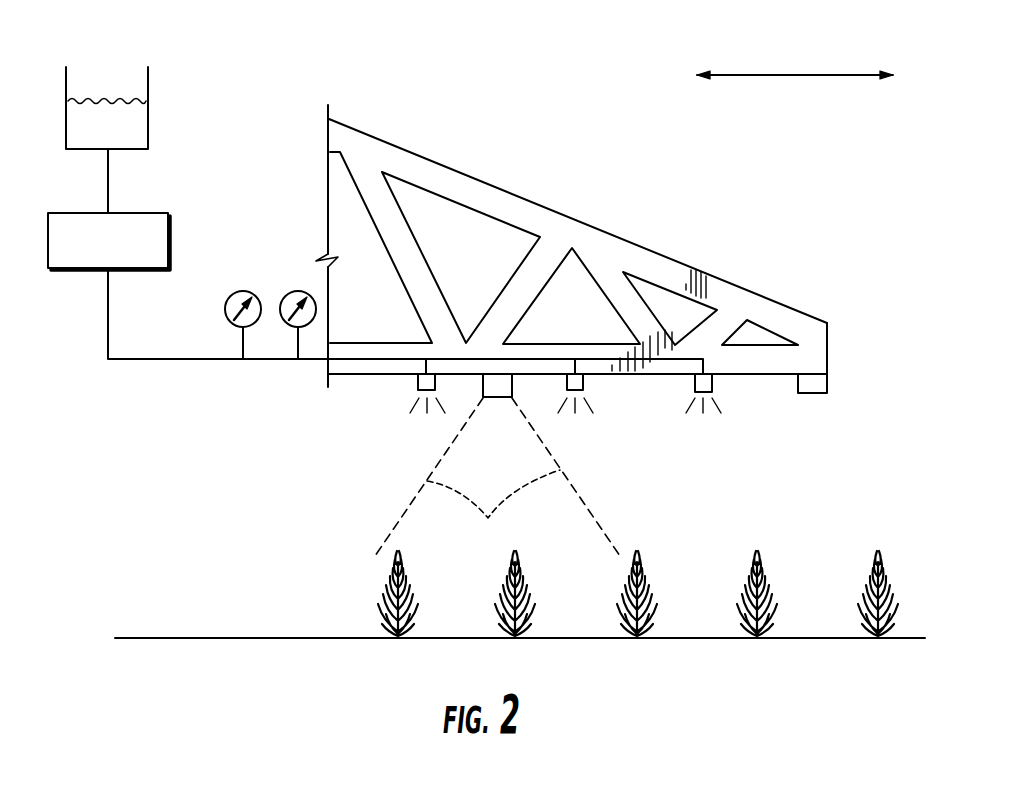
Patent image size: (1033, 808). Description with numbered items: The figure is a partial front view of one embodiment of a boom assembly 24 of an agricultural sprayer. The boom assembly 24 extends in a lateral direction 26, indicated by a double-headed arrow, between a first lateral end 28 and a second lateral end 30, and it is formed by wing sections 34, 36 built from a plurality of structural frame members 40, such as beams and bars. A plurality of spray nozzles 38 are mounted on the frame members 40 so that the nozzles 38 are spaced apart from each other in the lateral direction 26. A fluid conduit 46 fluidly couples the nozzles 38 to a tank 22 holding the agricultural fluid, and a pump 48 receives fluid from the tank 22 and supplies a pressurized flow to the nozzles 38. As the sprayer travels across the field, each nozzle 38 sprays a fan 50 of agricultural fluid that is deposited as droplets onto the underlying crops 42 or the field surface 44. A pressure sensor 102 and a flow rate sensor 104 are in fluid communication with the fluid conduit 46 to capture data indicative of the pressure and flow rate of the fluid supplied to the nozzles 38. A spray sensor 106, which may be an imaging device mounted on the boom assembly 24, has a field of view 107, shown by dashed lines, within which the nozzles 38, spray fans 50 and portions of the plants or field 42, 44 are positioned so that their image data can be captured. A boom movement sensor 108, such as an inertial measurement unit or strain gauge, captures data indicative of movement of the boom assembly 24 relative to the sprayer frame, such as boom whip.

The tank 22 is at (148, 118).
The boom assembly 24 is at (381, 120).
The lateral direction 26 is at (788, 74).
The first lateral end 28 is at (847, 332).
The second lateral end 30 is at (876, 302).
The first wing section 34 is at (477, 169).
The second wing section 36 is at (591, 241).
The spray nozzle 38 is at (418, 382).
The structural frame member 40 is at (537, 205).
The crops 42 is at (340, 577).
The field surface 44 is at (280, 637).
The fluid conduit 46 is at (160, 361).
The pump 48 is at (168, 227).
The spray fan 50 is at (421, 431).
The pressure sensor 102 is at (240, 292).
The flow rate sensor 104 is at (295, 292).
The spray sensor 106 is at (492, 397).
The field of view 107 is at (493, 517).
The boom movement sensor 108 is at (827, 382).